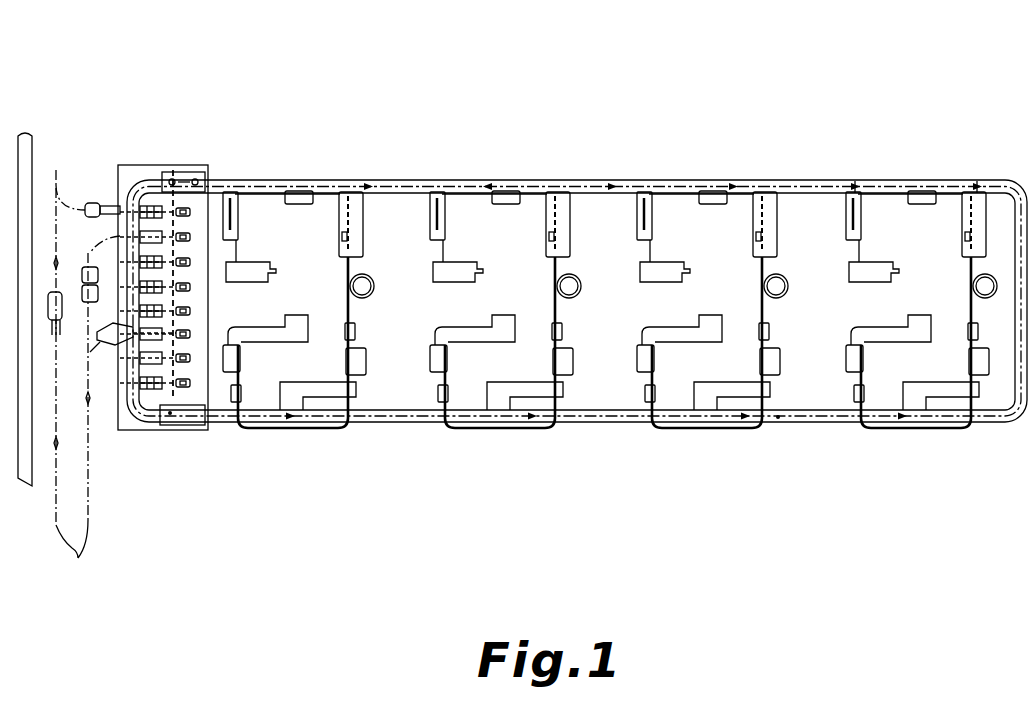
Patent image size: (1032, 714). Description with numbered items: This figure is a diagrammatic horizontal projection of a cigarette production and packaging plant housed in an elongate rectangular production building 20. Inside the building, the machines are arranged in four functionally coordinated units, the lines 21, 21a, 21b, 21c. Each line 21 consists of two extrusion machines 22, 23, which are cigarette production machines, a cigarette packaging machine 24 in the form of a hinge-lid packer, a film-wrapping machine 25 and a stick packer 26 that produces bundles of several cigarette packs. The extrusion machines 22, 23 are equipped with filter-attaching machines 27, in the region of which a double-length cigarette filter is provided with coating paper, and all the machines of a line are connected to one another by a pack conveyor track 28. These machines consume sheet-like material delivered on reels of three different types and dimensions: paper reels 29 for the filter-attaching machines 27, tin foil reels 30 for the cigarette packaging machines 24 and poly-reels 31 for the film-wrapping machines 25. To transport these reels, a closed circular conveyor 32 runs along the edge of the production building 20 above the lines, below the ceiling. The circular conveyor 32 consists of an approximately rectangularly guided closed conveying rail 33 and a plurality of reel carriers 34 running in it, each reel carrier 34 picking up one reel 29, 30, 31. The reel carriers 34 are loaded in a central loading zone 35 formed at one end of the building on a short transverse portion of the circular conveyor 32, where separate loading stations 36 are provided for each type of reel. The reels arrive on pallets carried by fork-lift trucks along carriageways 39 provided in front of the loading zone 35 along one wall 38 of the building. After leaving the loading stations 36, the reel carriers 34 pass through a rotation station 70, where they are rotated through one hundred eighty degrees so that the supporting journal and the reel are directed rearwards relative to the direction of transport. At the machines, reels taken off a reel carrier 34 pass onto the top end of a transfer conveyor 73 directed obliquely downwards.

The production building 20 is at (465, 474).
The line 21 is at (383, 444).
The line 21a is at (507, 449).
The line 21b is at (707, 455).
The line 21c is at (909, 452).
The extrusion machine 22 is at (262, 333).
The extrusion machine 23 is at (322, 392).
The cigarette packaging machine 24 is at (378, 200).
The film-wrapping machine 25 is at (460, 197).
The stick packer 26 is at (460, 268).
The filter-attaching machine 27 is at (437, 368).
The pack conveyor track 28 is at (290, 424).
The paper reel 29 is at (185, 388).
The tin foil reel 30 is at (183, 212).
The poly-reel 31 is at (117, 200).
The circular conveyor 32 is at (689, 156).
The conveying rail 33 is at (803, 158).
The reel carrier 34 is at (612, 186).
The loading zone 35 is at (140, 165).
The loading station 36 is at (172, 208).
The wall 38 is at (22, 485).
The carriageway 39 is at (78, 548).
The rotation station 70 is at (173, 170).
The transfer conveyor 73 is at (552, 200).